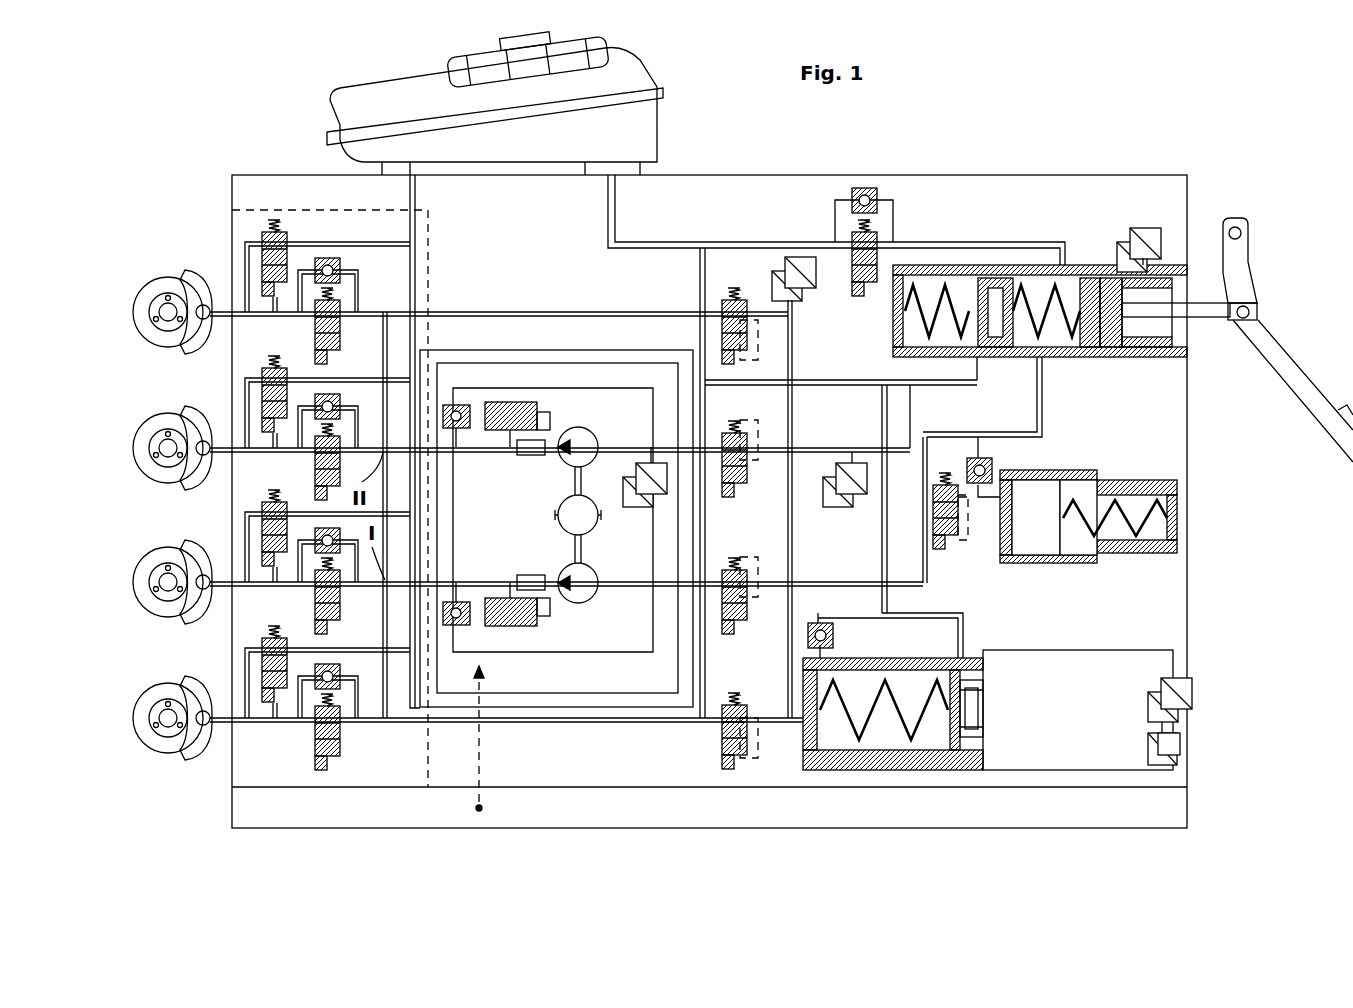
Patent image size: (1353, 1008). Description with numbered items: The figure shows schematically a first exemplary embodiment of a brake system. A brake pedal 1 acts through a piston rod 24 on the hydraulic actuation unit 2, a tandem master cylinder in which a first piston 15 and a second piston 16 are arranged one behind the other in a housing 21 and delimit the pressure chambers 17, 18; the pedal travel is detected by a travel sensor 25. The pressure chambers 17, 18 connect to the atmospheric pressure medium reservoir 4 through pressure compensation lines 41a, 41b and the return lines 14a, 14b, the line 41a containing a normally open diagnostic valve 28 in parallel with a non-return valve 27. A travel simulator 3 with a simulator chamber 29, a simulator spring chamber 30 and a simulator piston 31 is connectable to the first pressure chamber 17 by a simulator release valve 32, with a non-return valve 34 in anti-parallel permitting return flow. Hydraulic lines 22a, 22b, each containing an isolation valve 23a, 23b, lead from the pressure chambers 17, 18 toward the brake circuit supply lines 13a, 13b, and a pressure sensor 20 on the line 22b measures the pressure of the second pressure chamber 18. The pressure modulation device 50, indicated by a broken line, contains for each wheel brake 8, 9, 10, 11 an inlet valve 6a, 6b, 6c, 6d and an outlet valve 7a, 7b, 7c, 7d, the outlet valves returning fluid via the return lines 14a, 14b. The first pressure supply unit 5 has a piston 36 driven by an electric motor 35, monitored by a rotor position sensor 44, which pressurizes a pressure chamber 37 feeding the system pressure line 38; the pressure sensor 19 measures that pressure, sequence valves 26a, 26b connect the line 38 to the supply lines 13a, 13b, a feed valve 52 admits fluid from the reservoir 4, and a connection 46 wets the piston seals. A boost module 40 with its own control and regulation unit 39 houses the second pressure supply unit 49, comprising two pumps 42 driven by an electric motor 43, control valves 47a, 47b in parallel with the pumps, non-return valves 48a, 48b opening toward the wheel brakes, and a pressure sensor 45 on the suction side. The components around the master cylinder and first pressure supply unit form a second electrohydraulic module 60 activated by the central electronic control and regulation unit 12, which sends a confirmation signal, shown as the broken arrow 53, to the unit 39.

The brake pedal 1 is at (1295, 362).
The hydraulic actuation unit 2 is at (1050, 268).
The travel simulator 3 is at (1128, 466).
The pressure medium reservoir 4 is at (392, 100).
The first electrically controllable pressure supply unit 5 is at (1172, 648).
The inlet valve 6a is at (320, 322).
The inlet valve 6b is at (320, 458).
The inlet valve 6c is at (320, 592).
The inlet valve 6d is at (320, 728).
The outlet valve 7a is at (262, 257).
The outlet valve 7b is at (262, 393).
The outlet valve 7c is at (262, 527).
The outlet valve 7d is at (262, 663).
The wheel brake 8 is at (205, 337).
The wheel brake 9 is at (205, 473).
The wheel brake 10 is at (205, 607).
The wheel brake 11 is at (205, 743).
The electronic control and regulation unit 12 is at (1168, 812).
The brake circuit supply line 13a is at (390, 700).
The brake circuit supply line 13b is at (398, 400).
The return line 14a is at (616, 190).
The return line 14b is at (416, 190).
The first piston 15 is at (1128, 355).
The second piston 16 is at (998, 347).
The first pressure chamber 17 is at (1055, 347).
The second pressure chamber 18 is at (935, 285).
The pressure sensor 19 is at (775, 277).
The pressure sensor 20 is at (842, 507).
The housing 21 is at (1030, 185).
The hydraulic line 22a is at (830, 580).
The hydraulic line 22b is at (808, 446).
The isolation valve 23a is at (748, 600).
The isolation valve 23b is at (748, 462).
The piston rod 24 is at (1210, 318).
The travel sensor 25 is at (1152, 232).
The sequence valve 26a is at (722, 737).
The sequence valve 26b is at (748, 330).
The non-return valve 27 is at (850, 195).
The diagnostic valve 28 is at (853, 258).
The simulator chamber 29 is at (1010, 540).
The simulator spring chamber 30 is at (1155, 540).
The simulator piston 31 is at (1037, 488).
The simulator release valve 32 is at (935, 510).
The non-return valve 34 is at (975, 458).
The electric motor 35 is at (1092, 665).
The piston 36 is at (948, 738).
The pressure chamber 37 is at (880, 748).
The system pressure line 38 is at (785, 683).
The electronic control and regulation unit 39 is at (612, 675).
The boost module 40 is at (600, 346).
The pressure compensation line 41a is at (985, 242).
The pressure compensation line 41b is at (872, 378).
The pump 42 is at (590, 435).
The electric motor 43 is at (560, 505).
The rotor position sensor 44 is at (1192, 698).
The pressure sensor 45 is at (635, 510).
The connection 46 is at (972, 672).
The control valve 47a is at (540, 622).
The control valve 47b is at (540, 405).
The non-return valve 48a is at (460, 600).
The non-return valve 48b is at (460, 430).
The second electrically controllable pressure supply unit 49 is at (550, 530).
The pressure modulation device 50 is at (289, 205).
The feed valve 52 is at (835, 634).
The broken arrow 53 is at (480, 757).
The second electrohydraulic module 60 is at (1137, 168).